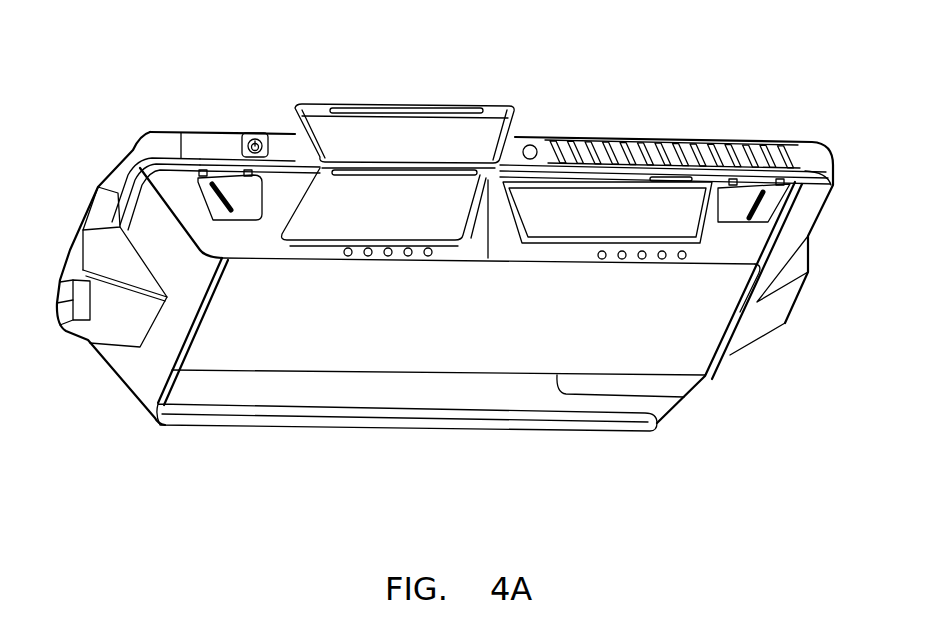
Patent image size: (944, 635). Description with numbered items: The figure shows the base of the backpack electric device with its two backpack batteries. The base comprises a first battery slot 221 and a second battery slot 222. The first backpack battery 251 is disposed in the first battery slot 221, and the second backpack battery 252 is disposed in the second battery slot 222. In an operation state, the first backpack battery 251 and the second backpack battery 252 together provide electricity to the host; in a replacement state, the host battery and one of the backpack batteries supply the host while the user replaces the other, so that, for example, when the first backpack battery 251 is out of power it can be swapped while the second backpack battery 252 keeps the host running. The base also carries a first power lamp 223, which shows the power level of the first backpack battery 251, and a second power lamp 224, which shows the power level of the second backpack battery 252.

The first battery slot 221 is at (710, 228).
The second battery slot 222 is at (297, 240).
The first power lamp 223 is at (622, 260).
The second power lamp 224 is at (368, 257).
The first backpack battery 251 is at (605, 137).
The second backpack battery 252 is at (412, 133).